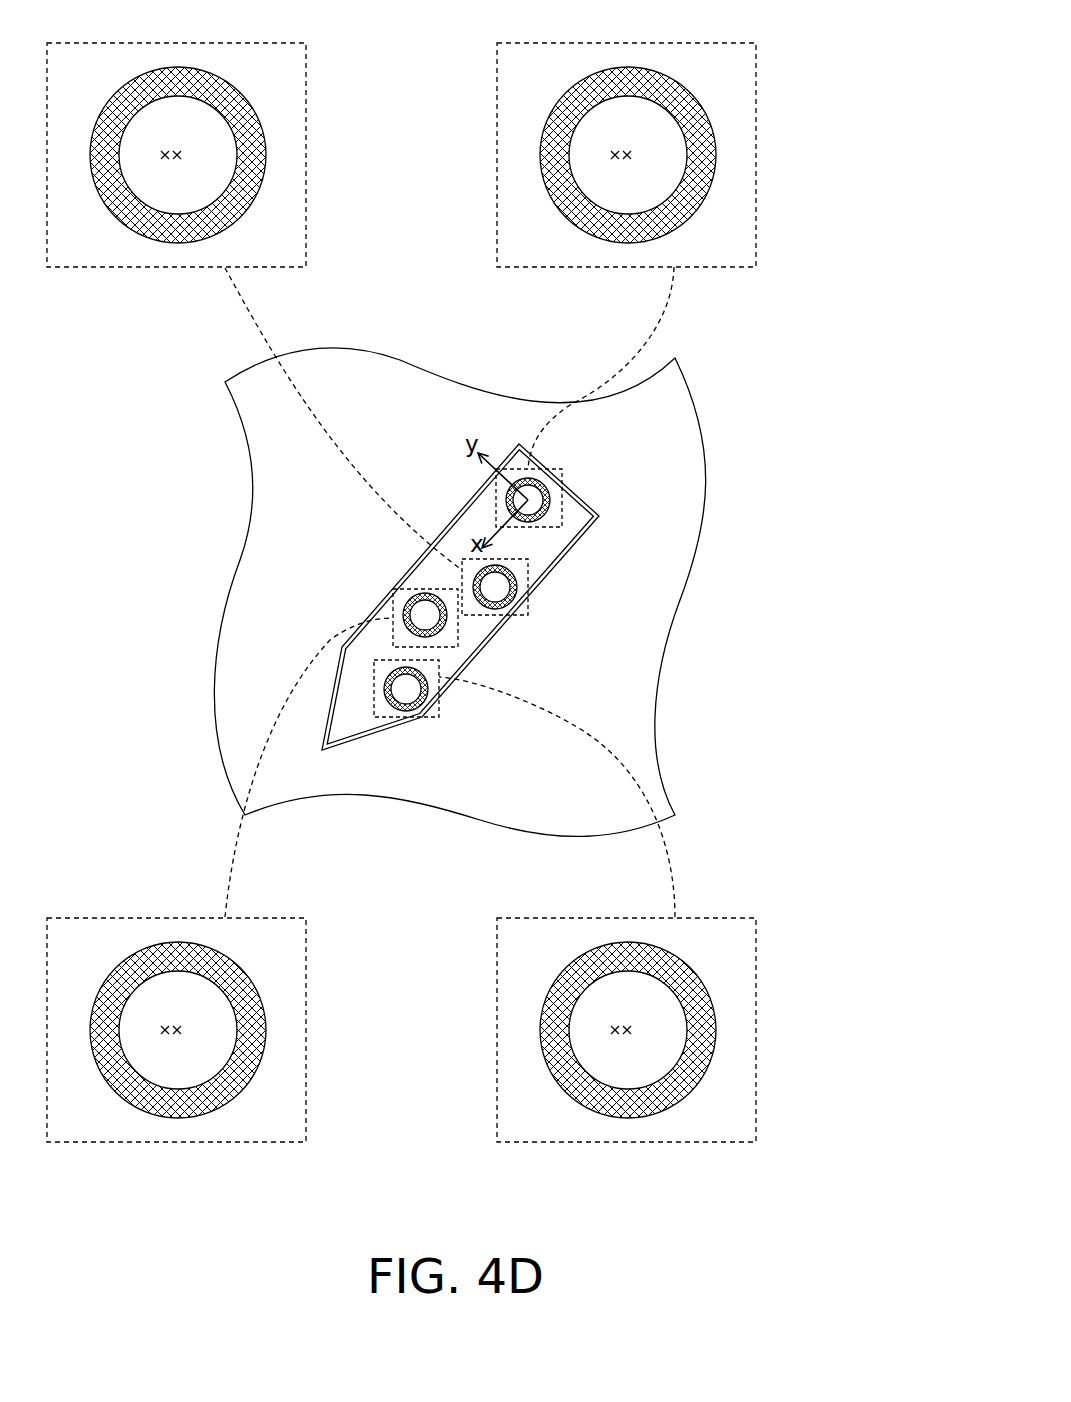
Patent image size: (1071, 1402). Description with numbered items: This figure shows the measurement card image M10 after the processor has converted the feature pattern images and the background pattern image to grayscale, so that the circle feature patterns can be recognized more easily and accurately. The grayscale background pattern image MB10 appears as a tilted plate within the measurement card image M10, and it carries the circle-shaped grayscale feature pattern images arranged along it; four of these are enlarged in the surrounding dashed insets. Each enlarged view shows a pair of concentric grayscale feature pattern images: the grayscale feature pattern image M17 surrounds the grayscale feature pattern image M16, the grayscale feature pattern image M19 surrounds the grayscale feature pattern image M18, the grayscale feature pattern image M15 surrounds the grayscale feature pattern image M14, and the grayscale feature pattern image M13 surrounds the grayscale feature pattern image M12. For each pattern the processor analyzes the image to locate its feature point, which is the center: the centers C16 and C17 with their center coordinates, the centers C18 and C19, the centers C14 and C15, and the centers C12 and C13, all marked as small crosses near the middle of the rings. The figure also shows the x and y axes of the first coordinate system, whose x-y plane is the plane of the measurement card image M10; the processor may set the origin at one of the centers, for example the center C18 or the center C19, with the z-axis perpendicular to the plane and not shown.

The measurement card image M10 is at (683, 585).
The grayscale background pattern image MB10 is at (600, 516).
The grayscale feature pattern image M17 is at (232, 88).
The grayscale feature pattern image M16 is at (230, 110).
The center C16 is at (181, 154).
The center C17 is at (165, 158).
The grayscale feature pattern image M19 is at (682, 88).
The grayscale feature pattern image M18 is at (680, 110).
The center C18 is at (631, 154).
The center C19 is at (615, 158).
The grayscale feature pattern image M15 is at (232, 963).
The grayscale feature pattern image M14 is at (230, 985).
The center C14 is at (181, 1029).
The center C15 is at (165, 1033).
The grayscale feature pattern image M13 is at (682, 963).
The grayscale feature pattern image M12 is at (680, 985).
The center C12 is at (631, 1029).
The center C13 is at (615, 1033).